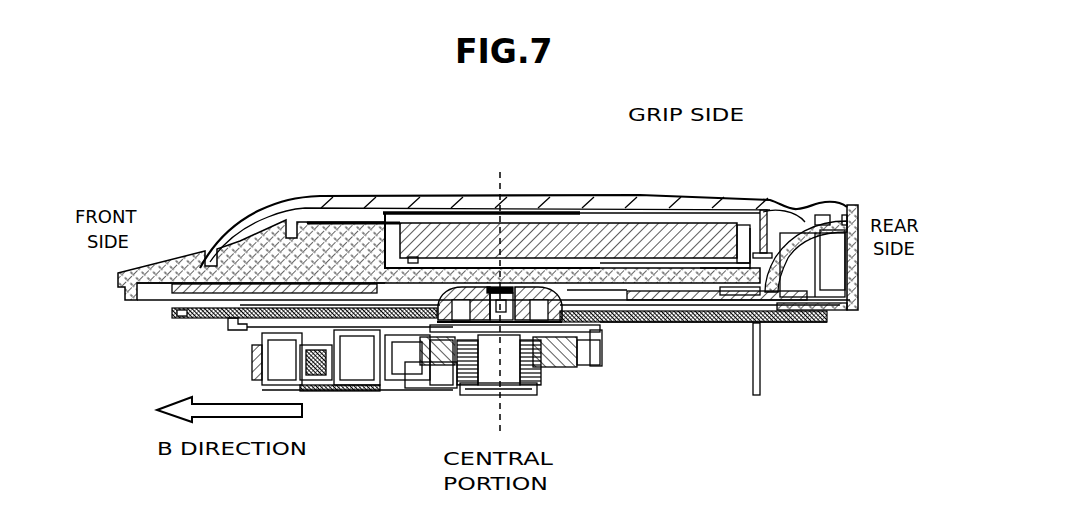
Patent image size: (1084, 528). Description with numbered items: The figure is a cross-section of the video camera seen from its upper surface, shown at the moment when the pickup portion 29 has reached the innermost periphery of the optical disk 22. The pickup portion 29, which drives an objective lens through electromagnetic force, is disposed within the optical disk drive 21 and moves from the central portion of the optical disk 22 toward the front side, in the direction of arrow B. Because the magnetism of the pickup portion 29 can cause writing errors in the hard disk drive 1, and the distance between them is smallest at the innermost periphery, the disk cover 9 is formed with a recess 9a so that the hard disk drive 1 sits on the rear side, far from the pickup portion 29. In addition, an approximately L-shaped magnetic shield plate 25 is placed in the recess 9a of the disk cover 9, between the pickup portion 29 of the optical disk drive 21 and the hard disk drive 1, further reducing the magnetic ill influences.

The hard disk drive 1 is at (684, 243).
The disk cover 9 is at (312, 250).
The recess 9a is at (383, 212).
The magnetic shield plate 25 is at (396, 242).
The optical disk drive 21 is at (571, 377).
The optical disk 22 is at (683, 315).
The pickup portion 29 is at (358, 392).